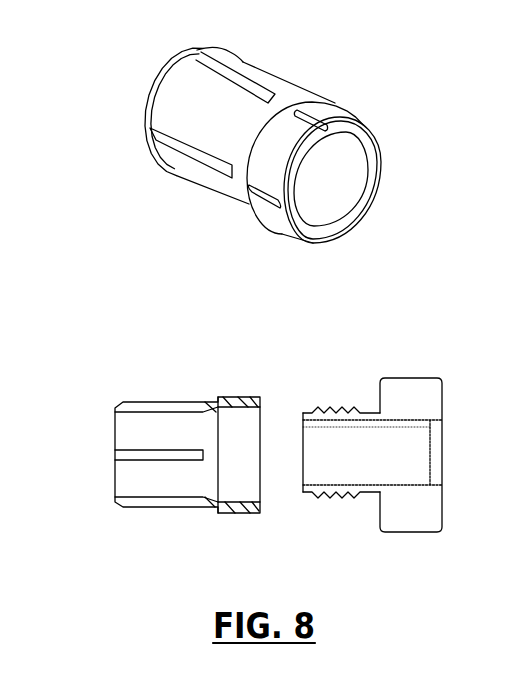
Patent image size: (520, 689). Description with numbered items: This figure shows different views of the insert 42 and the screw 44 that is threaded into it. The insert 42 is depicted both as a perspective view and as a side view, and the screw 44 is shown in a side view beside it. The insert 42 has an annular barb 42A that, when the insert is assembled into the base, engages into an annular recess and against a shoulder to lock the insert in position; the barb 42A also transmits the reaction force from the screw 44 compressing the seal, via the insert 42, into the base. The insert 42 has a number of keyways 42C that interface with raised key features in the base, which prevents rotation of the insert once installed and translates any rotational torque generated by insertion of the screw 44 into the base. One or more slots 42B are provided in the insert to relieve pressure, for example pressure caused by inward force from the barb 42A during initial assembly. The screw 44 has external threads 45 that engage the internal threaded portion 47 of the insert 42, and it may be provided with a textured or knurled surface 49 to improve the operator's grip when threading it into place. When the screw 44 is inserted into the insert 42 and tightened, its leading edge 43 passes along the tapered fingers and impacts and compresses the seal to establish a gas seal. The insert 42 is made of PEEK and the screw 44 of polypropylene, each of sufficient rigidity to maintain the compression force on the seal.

The insert 42 is at (207, 416).
The annular barb 42A is at (124, 402).
The slots 42B is at (192, 152).
The keyways 42C is at (306, 112).
The leading edge 43 is at (303, 488).
The screw 44 is at (395, 454).
The external threads 45 is at (342, 493).
The internal threaded portion 47 is at (262, 408).
The textured or knurled surface 49 is at (411, 377).